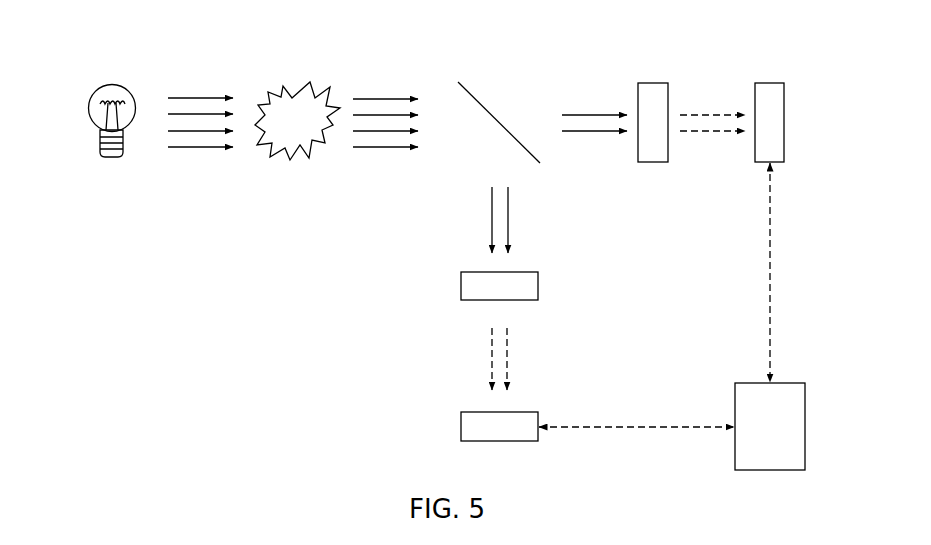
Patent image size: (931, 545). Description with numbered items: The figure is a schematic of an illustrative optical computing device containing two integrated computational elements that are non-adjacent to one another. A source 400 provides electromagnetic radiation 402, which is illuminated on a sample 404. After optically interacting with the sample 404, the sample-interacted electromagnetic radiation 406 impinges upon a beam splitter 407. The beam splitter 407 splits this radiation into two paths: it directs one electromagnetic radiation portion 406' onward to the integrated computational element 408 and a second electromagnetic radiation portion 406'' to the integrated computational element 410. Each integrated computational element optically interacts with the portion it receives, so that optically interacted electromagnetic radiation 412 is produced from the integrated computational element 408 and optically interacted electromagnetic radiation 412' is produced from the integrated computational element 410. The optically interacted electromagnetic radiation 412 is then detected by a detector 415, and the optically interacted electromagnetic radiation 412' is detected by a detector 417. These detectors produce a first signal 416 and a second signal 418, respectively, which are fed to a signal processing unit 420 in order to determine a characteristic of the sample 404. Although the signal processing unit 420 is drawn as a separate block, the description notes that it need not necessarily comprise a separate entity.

The source 400 is at (113, 90).
The electromagnetic radiation 402 is at (190, 98).
The sample 404 is at (277, 100).
The sample-interacted electromagnetic radiation 406 is at (385, 91).
The beam splitter 407 is at (470, 93).
The electromagnetic radiation portion 406' is at (594, 92).
The integrated computational element 408 is at (652, 88).
The optically interacted electromagnetic radiation 412 is at (716, 92).
The detector 415 is at (770, 88).
The first signal 416 is at (770, 258).
The electromagnetic radiation portion 406'' is at (539, 220).
The integrated computational element 410 is at (538, 287).
The optically interacted electromagnetic radiation 412' is at (536, 359).
The detector 417 is at (461, 422).
The second signal 418 is at (613, 427).
The signal processing unit 420 is at (787, 438).